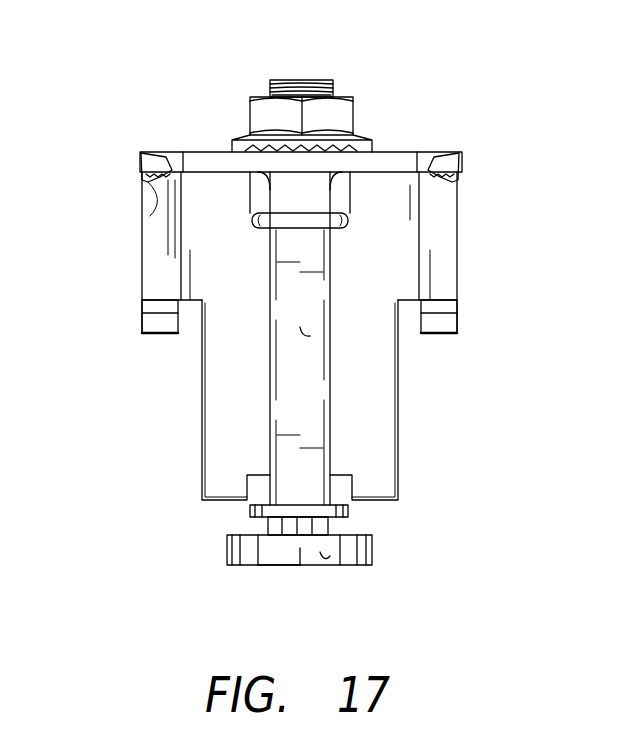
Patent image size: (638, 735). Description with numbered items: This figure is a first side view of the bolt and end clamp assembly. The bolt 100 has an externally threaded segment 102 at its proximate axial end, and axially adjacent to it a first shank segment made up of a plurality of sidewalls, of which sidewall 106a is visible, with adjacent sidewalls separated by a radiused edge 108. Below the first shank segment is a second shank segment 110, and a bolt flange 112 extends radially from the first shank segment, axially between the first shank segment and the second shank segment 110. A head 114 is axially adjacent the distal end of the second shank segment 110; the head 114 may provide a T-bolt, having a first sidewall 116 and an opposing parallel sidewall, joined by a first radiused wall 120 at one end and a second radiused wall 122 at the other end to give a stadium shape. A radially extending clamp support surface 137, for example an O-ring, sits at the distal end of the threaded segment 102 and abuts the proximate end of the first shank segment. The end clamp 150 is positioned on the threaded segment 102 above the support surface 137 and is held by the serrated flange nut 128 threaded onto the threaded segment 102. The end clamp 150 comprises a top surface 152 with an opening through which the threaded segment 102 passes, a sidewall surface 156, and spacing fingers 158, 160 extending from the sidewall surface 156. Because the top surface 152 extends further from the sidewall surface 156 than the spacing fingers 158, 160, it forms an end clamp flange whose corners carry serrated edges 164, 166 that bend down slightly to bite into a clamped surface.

The bolt 100 is at (245, 422).
The externally threaded segment 102 is at (303, 80).
The sidewall 106a is at (306, 336).
The radiused edge 108 is at (268, 365).
The second shank segment 110 is at (330, 529).
The bolt flange 112 is at (250, 512).
The head 114 is at (271, 576).
The first sidewall 116 is at (325, 558).
The first radiused wall 120 is at (372, 550).
The second radiused wall 122 is at (228, 556).
The serrated flange nut 128 is at (250, 108).
The radially extending clamp support surface 137 is at (352, 222).
The end clamp 150 is at (473, 129).
The top surface 152 is at (393, 152).
The sidewall surface 156 is at (158, 244).
The spacing finger 158 is at (146, 334).
The spacing finger 160 is at (447, 335).
The serrated edge 164 is at (148, 180).
The serrated edge 166 is at (447, 182).